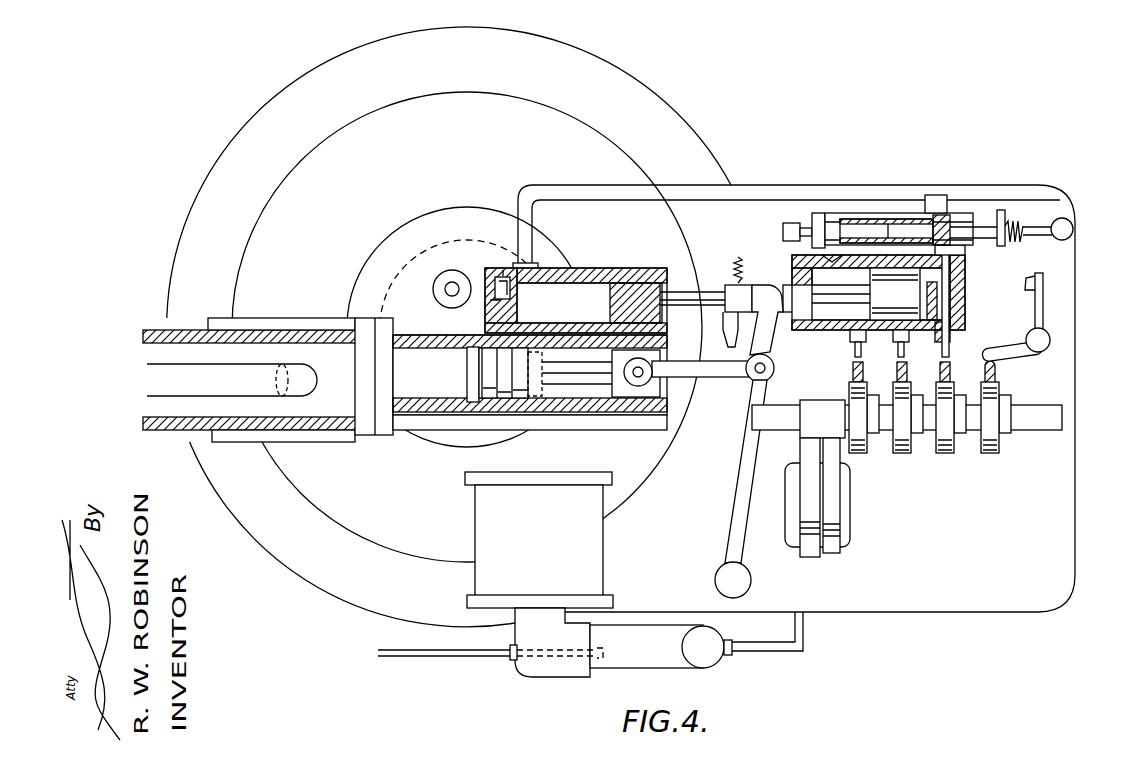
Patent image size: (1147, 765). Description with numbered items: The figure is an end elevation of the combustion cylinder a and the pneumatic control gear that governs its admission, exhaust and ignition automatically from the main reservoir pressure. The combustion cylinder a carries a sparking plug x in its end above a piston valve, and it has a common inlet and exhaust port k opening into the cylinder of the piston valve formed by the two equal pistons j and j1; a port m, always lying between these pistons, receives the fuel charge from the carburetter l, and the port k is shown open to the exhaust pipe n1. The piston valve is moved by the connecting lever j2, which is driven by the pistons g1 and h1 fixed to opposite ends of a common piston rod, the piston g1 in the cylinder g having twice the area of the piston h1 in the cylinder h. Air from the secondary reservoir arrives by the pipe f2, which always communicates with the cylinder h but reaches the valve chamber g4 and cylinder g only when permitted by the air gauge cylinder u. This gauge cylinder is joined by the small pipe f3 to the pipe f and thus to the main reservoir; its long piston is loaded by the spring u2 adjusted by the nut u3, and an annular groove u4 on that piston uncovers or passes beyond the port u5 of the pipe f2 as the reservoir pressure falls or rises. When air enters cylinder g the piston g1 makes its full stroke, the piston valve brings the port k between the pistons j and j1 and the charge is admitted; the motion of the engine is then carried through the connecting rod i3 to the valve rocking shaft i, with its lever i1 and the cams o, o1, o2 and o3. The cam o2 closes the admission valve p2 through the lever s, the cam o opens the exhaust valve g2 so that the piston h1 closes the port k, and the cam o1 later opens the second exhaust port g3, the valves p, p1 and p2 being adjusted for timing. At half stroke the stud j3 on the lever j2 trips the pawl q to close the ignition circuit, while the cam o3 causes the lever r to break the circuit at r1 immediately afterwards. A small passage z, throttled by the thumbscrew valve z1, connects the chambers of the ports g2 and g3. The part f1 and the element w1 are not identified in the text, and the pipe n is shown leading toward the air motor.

The combustion cylinder a is at (438, 289).
The sparking plug x is at (455, 284).
The air pipe to air motor n is at (170, 392).
The exhaust pipe n1 is at (437, 380).
The inlet and exhaust port k is at (470, 356).
The piston valve piston j is at (512, 399).
The port m is at (540, 398).
The piston valve piston j1 is at (626, 392).
The cylinder h is at (576, 300).
The piston h1 is at (667, 303).
The stud j3 is at (776, 352).
The pawl q is at (722, 328).
The connecting lever j2 is at (746, 456).
The cylinder g is at (820, 282).
The piston g1 is at (866, 294).
The exhaust valve g2 is at (830, 256).
The second exhaust port g3 is at (949, 262).
The valve chamber g4 is at (960, 251).
The valve p is at (856, 350).
The valve p1 is at (900, 352).
The admission valve p2 is at (950, 303).
The lever s is at (908, 372).
The pipe f is at (623, 642).
The pipe f1 is at (444, 656).
The pipe f2 is at (798, 187).
The small pipe f3 is at (803, 646).
The air gauge cylinder u is at (833, 230).
The lug w1 is at (932, 212).
The small passage z is at (863, 240).
The thumbscrew valve z1 is at (889, 241).
The port u5 is at (953, 228).
The annular groove u4 is at (996, 228).
The nut u3 is at (1018, 228).
The spring u2 is at (1073, 221).
The ignition circuit break point r1 is at (1044, 283).
The lever r is at (1012, 350).
The valve rocking shaft i is at (1063, 415).
The lever i1 is at (822, 419).
The connecting rod i3 is at (830, 508).
The cam o is at (862, 447).
The cam o1 is at (904, 447).
The cam o2 is at (947, 447).
The cam o3 is at (992, 447).
The carburetter l is at (539, 540).